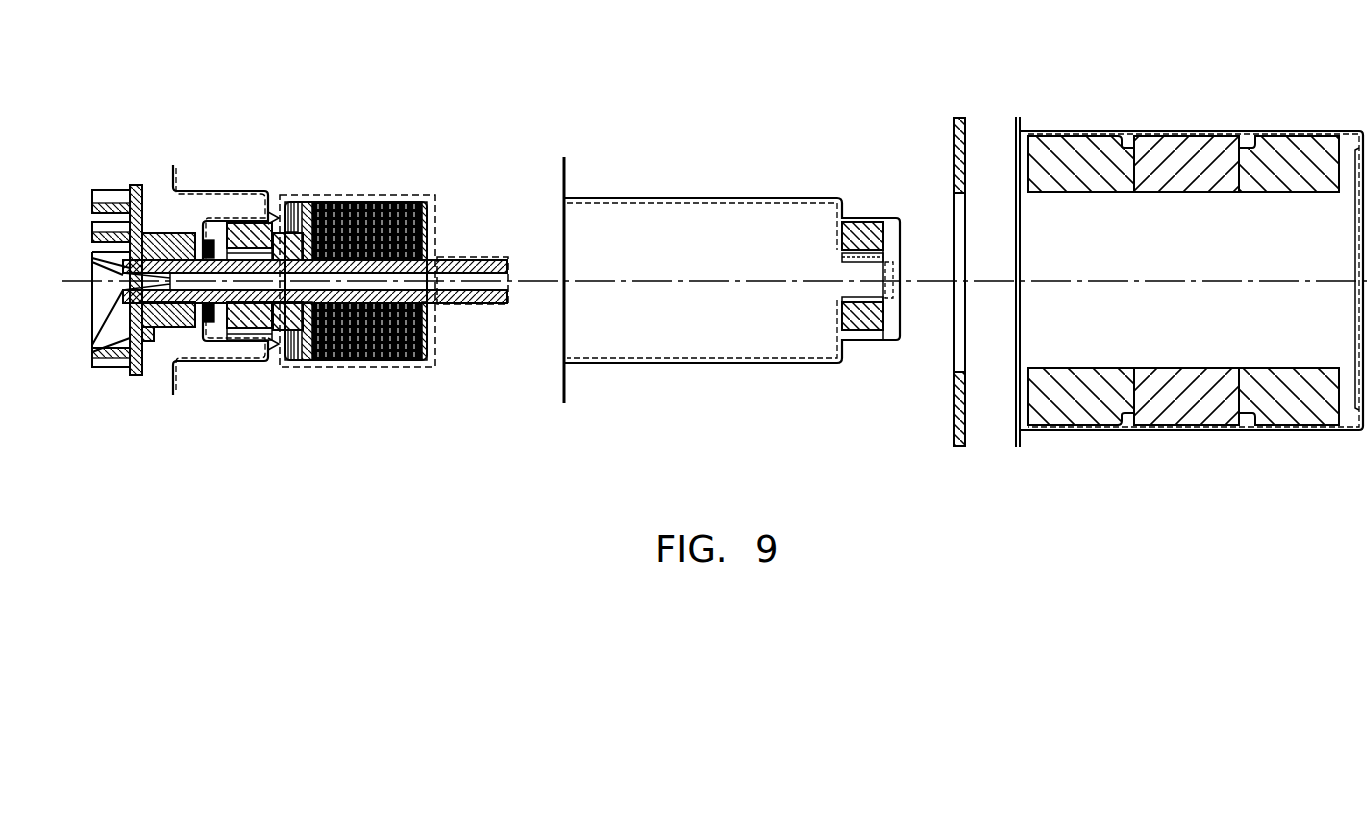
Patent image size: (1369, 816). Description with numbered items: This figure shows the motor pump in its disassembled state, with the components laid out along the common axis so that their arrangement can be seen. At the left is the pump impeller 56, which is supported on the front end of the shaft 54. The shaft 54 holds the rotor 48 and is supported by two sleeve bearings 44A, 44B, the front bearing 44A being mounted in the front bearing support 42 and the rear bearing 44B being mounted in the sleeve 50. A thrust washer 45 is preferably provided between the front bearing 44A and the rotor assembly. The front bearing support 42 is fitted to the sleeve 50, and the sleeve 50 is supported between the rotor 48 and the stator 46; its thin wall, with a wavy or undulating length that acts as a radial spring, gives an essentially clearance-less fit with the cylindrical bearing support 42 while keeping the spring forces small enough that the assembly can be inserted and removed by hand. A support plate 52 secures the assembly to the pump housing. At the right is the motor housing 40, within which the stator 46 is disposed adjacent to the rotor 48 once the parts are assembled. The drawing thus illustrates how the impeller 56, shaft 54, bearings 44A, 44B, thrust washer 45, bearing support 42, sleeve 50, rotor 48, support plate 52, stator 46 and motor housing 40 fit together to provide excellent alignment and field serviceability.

The motor housing 40 is at (1232, 126).
The front bearing support 42 is at (220, 364).
The sleeve bearing 44A is at (245, 222).
The sleeve bearing 44B is at (862, 220).
The thrust washer 45 is at (290, 202).
The stator 46 is at (1168, 163).
The rotor 48 is at (360, 202).
The sleeve 50 is at (702, 195).
The support plate 52 is at (945, 410).
The shaft 54 is at (463, 303).
The pump impeller 56 is at (118, 184).